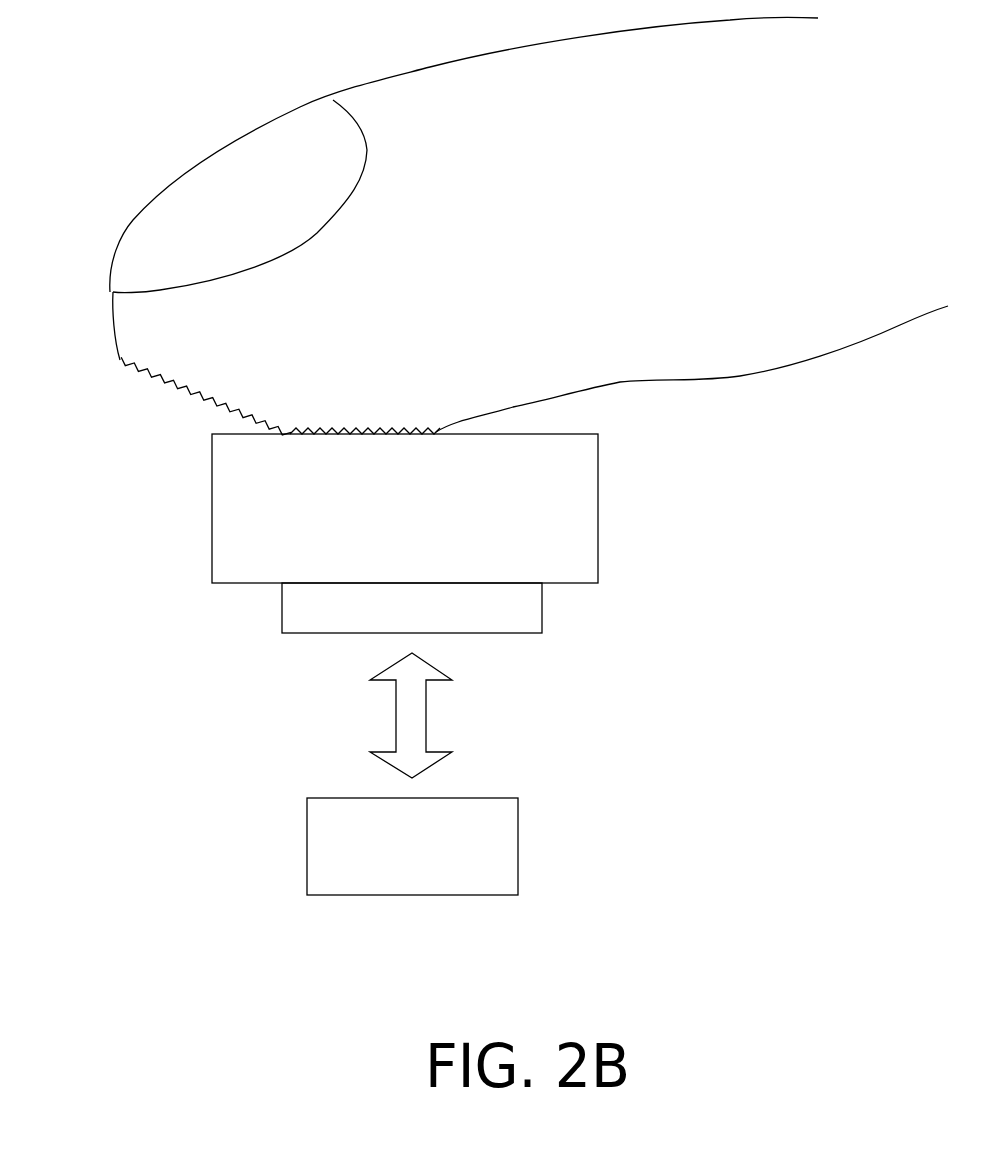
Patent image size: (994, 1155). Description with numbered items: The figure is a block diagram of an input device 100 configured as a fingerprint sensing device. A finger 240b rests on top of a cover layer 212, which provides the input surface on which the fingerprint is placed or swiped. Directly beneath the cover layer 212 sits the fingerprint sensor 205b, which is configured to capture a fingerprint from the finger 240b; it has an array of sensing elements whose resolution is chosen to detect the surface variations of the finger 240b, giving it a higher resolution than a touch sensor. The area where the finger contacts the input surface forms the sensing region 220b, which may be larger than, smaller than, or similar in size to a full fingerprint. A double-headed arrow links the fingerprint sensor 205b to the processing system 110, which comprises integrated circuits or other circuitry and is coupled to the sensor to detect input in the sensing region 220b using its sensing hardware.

The input device 100 is at (128, 752).
The processing system 110 is at (307, 852).
The cover layer 212 is at (598, 528).
The fingerprint sensor 205b is at (542, 617).
The sensing region 220b is at (160, 415).
The finger 240b is at (812, 362).